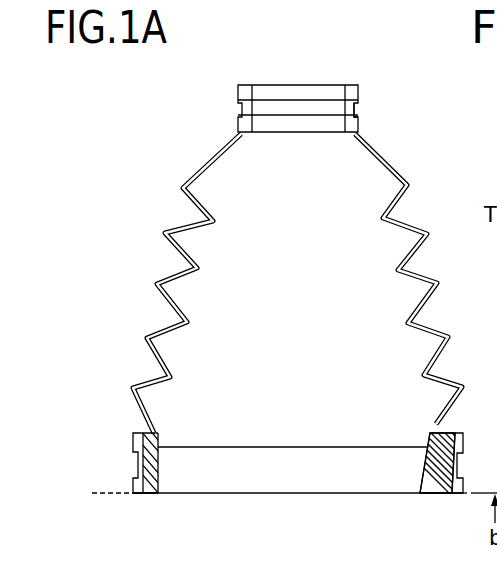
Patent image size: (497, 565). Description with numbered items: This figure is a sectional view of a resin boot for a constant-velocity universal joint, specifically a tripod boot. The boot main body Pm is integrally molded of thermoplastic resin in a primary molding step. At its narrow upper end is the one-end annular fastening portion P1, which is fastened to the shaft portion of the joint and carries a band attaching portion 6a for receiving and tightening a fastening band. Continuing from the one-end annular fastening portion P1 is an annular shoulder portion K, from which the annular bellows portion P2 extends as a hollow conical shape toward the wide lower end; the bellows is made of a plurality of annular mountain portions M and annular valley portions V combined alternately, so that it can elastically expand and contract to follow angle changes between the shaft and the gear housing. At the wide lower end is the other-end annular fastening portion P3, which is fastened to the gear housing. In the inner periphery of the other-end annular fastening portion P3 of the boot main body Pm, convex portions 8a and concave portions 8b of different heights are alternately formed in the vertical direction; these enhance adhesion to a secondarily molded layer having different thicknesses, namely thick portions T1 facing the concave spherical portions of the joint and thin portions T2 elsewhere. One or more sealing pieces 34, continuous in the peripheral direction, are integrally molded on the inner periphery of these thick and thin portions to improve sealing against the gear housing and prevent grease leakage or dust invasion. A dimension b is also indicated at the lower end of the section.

The one-end annular fastening portion P1 is at (217, 103).
The annular bellows portion P2 is at (267, 283).
The other-end annular fastening portion P3 is at (142, 444).
The annular mountain portion M is at (183, 187).
The annular valley portion V is at (215, 221).
The annular shoulder portion K is at (386, 165).
The boot main body Pm is at (392, 285).
The band attaching portion 6a is at (364, 102).
The sealing piece 34 is at (160, 475).
The convex portion 8a is at (428, 452).
The concave portion 8b is at (422, 462).
The thick portion T1 is at (422, 494).
The thin portion T2 is at (157, 493).
The dimension b is at (103, 503).